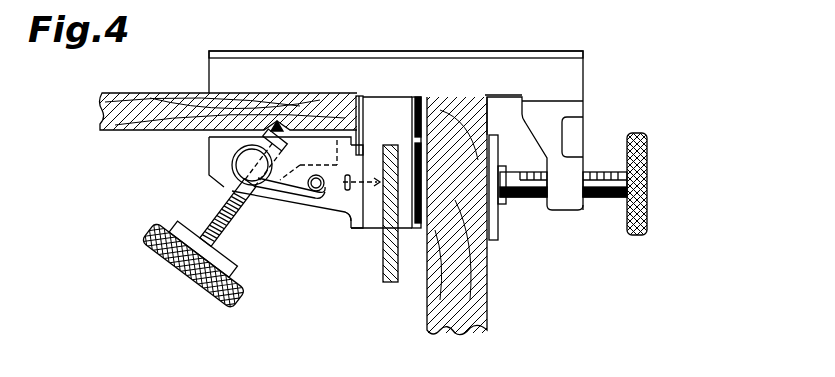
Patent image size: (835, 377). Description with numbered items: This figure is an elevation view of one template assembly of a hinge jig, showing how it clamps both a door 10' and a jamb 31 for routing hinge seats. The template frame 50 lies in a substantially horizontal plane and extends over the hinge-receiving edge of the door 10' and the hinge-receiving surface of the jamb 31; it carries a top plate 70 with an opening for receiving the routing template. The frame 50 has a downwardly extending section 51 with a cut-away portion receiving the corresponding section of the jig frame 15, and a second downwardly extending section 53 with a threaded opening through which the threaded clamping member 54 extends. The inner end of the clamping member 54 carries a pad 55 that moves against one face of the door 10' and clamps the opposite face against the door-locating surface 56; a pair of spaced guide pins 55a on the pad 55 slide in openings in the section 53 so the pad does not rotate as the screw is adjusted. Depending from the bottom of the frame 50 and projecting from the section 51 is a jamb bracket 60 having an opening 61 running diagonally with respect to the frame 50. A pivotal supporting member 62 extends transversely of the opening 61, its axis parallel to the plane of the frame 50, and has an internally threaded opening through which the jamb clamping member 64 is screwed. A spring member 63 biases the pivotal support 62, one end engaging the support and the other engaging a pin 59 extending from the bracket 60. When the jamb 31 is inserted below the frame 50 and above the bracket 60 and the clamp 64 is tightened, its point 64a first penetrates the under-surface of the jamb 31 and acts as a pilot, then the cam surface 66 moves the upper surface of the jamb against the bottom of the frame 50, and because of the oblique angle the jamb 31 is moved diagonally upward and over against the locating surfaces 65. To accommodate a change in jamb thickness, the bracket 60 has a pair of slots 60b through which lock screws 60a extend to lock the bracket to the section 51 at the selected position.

The jamb 31 is at (105, 131).
The top plate 70 is at (583, 57).
The template frame 50 is at (578, 84).
The second downwardly extending section 53 is at (577, 113).
The pad 55 is at (498, 238).
The guide pins 55a is at (532, 199).
The threaded clamping member 54 is at (648, 213).
The door 10' is at (493, 208).
The door-locating surface 56 is at (420, 230).
The jig frame 15 is at (391, 280).
The downwardly extending section 51 is at (378, 230).
The jamb bracket 60 is at (281, 214).
The lock screws 60a is at (352, 216).
The slots 60b is at (360, 230).
The pin 59 is at (313, 176).
The pivotal supporting member 62 is at (238, 162).
The spring member 63 is at (296, 198).
The opening 61 is at (225, 181).
The clamping member 64 is at (171, 262).
The point 64a is at (280, 120).
The cam surface 66 is at (272, 128).
The locating surfaces 65 is at (364, 98).